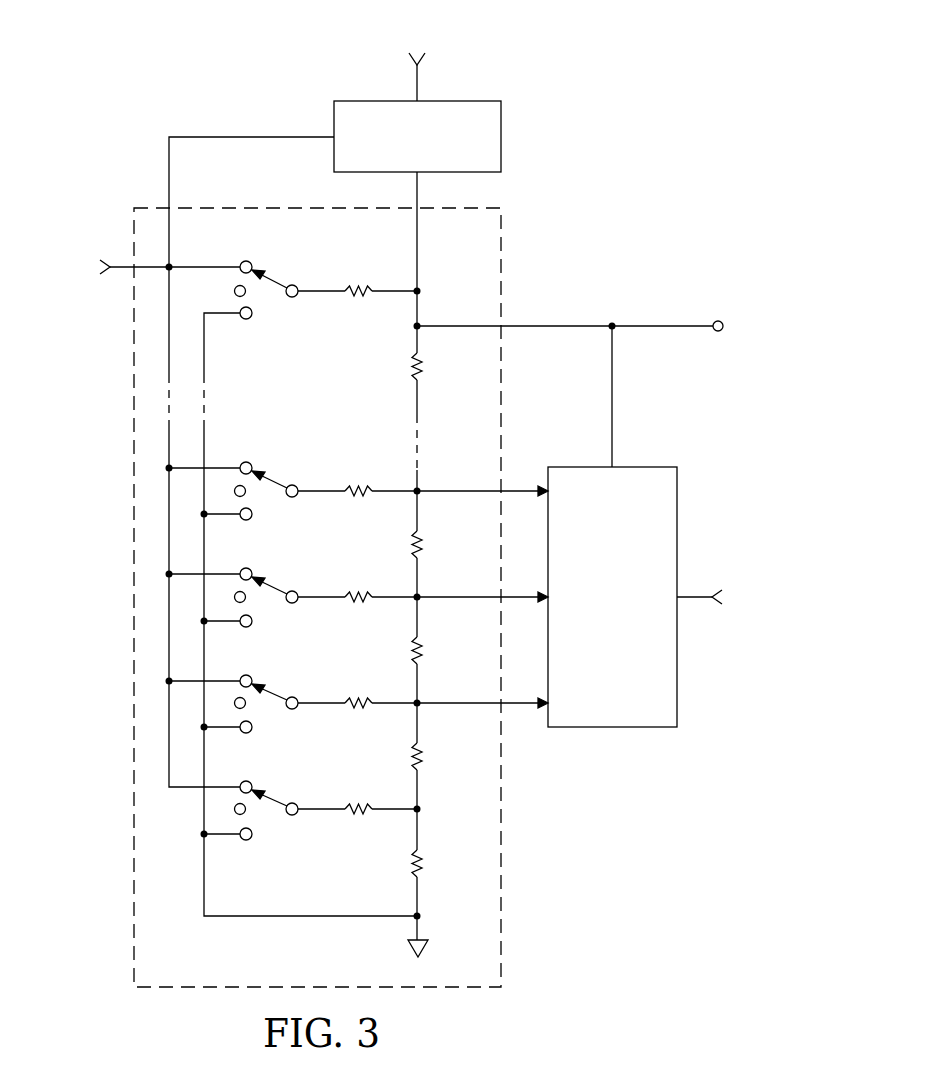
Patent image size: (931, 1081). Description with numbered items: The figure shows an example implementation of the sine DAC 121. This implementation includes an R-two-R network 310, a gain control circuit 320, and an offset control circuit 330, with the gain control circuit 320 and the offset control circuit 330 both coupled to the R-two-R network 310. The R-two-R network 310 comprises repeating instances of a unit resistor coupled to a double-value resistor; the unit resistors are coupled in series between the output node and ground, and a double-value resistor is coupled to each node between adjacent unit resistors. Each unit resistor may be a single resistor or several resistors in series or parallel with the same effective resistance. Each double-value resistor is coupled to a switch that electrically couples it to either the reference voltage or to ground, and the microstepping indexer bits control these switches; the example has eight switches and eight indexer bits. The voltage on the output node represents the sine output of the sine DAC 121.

The sine DAC 121 is at (238, 64).
The offset control circuit 330 is at (501, 122).
The R-2R network 310 is at (126, 613).
The gain control circuit 320 is at (590, 646).